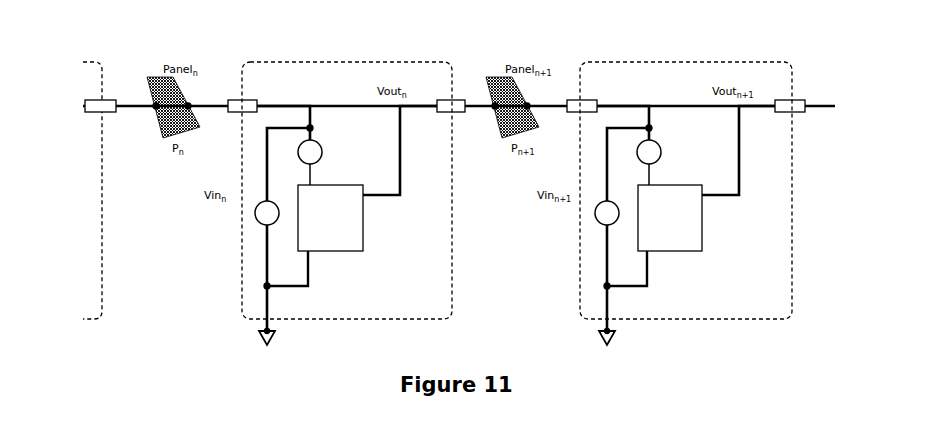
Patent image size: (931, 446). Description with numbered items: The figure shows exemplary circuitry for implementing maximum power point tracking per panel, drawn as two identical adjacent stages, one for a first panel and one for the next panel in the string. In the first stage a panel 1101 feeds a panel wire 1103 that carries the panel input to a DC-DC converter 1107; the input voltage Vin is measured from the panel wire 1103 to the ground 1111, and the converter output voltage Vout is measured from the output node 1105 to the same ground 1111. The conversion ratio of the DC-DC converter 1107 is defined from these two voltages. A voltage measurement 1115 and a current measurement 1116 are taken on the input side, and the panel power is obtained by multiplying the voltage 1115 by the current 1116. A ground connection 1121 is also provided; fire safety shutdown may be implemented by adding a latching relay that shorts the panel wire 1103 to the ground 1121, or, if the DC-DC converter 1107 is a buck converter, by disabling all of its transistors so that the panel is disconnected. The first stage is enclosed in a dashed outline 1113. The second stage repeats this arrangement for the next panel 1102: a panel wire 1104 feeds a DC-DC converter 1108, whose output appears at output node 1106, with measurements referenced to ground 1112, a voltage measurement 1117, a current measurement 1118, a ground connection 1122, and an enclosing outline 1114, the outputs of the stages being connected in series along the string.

The photovoltaic panel n 1101 is at (147, 77).
The photovoltaic panel n+1 1102 is at (486, 88).
The panel wire 1103 is at (337, 85).
The input conductor of converter n+1 1104 is at (634, 104).
The output node 1105 is at (400, 142).
The output conductor of converter n+1 1106 is at (729, 148).
The DC-DC converter 1107 is at (407, 274).
The DC/DC converter n+1 1108 is at (692, 220).
The ground 1111 is at (362, 309).
The common return conductor n+1 1112 is at (653, 281).
The power optimizer circuit n 1113 is at (447, 345).
The power optimizer circuit n+1 1114 is at (686, 204).
The voltage 1115 is at (255, 213).
The current 1116 is at (369, 144).
The voltmeter n+1 1117 is at (580, 197).
The ammeter n+1 1118 is at (672, 145).
The ground 1121 is at (329, 362).
The ground connection n+1 1122 is at (634, 347).